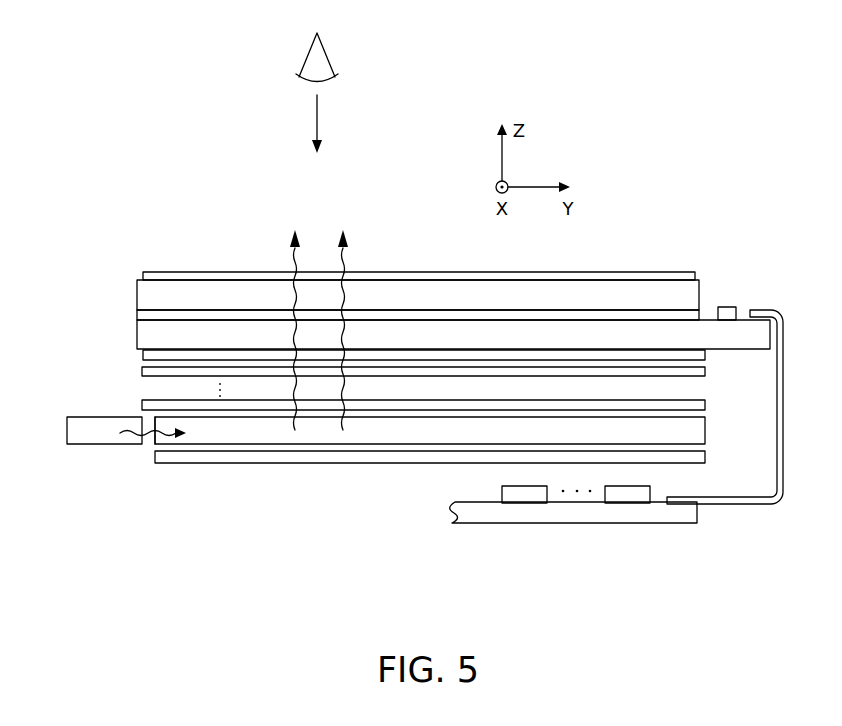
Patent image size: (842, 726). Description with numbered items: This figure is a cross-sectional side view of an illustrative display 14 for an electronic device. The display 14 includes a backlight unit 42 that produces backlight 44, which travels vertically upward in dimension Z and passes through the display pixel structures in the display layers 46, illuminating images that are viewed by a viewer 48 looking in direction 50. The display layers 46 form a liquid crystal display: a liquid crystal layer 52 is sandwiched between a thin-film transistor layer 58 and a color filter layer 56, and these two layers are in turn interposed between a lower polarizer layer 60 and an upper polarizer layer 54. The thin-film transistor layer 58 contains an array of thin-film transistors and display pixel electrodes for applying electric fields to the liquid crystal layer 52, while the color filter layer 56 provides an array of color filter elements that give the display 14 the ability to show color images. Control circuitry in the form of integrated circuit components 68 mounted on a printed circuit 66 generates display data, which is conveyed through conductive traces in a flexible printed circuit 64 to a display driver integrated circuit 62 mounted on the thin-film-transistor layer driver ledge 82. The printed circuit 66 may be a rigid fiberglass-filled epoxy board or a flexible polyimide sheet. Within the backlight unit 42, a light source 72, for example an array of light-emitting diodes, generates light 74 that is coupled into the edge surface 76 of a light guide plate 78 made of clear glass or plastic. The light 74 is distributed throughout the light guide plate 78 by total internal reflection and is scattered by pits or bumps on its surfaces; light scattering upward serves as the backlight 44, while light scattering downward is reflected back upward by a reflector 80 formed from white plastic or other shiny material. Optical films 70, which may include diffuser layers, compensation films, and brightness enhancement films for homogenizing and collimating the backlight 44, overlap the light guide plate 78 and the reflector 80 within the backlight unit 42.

The display 14 is at (724, 124).
The backlight unit 42 is at (717, 363).
The backlight 44 is at (337, 257).
The display layers 46 is at (105, 268).
The viewer 48 is at (325, 56).
The direction 50 is at (318, 128).
The liquid crystal layer 52 is at (192, 314).
The upper polarizer layer 54 is at (157, 274).
The color filter layer 56 is at (137, 291).
The thin-film transistor layer 58 is at (137, 338).
The lower polarizer layer 60 is at (145, 354).
The display driver integrated circuit 62 is at (737, 309).
The flexible printed circuit 64 is at (783, 357).
The printed circuit 66 is at (545, 523).
The components 68 is at (543, 490).
The optical films 70 is at (150, 402).
The light source 72 is at (67, 438).
The light 74 is at (133, 430).
The edge surface 76 is at (155, 440).
The light guide plate 78 is at (217, 440).
The reflector 80 is at (275, 461).
The thin-film-transistor layer driver ledge 82 is at (703, 294).